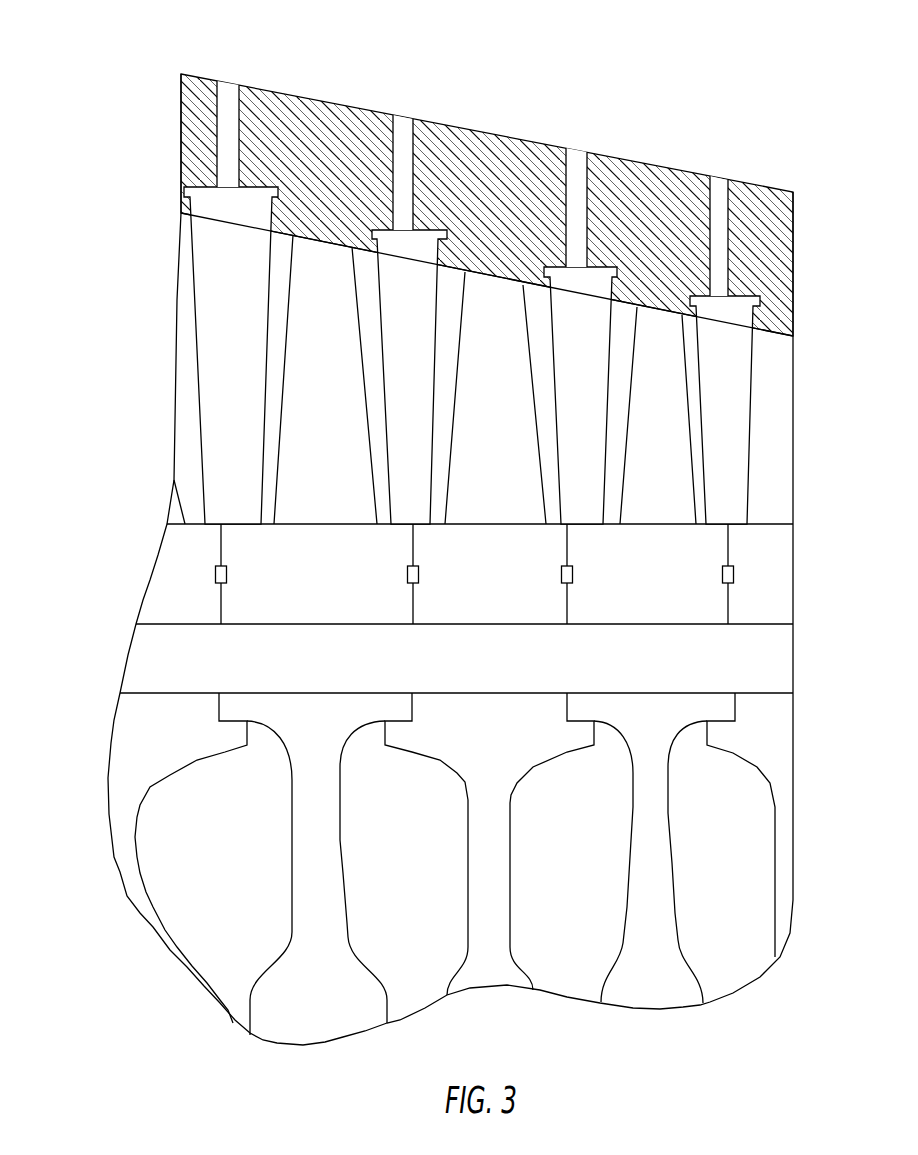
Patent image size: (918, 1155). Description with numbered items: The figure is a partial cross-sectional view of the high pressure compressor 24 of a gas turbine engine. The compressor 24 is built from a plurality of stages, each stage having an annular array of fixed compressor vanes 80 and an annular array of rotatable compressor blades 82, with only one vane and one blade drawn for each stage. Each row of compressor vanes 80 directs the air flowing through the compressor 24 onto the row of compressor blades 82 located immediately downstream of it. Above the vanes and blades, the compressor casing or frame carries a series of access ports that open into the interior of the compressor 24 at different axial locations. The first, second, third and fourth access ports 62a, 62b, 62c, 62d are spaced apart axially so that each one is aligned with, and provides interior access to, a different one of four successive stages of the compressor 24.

The high pressure compressor 24 is at (115, 110).
The first access port 62a is at (223, 80).
The second access port 62b is at (401, 110).
The third access port 62c is at (578, 148).
The fourth access port 62d is at (720, 175).
The fixed compressor vane 80 is at (218, 357).
The rotatable compressor blade 82 is at (314, 384).